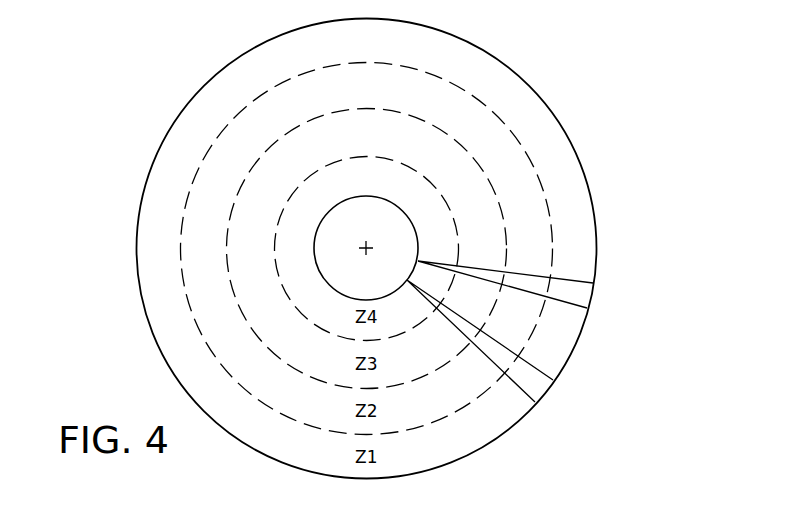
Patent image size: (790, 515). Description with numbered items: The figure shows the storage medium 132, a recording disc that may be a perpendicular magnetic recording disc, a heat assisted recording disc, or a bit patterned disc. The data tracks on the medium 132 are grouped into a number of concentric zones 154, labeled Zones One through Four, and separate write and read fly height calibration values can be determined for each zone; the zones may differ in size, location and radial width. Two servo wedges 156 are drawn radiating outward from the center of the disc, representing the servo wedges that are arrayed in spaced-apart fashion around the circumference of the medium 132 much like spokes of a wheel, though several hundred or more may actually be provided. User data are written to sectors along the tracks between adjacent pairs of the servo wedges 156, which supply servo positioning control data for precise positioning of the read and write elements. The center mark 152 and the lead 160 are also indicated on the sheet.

The storage medium 132 is at (575, 122).
The center of disc 152 is at (373, 252).
The concentric zones 154 is at (160, 222).
The servo wedges 156 is at (582, 298).
The off-sheet element 160 is at (700, 514).